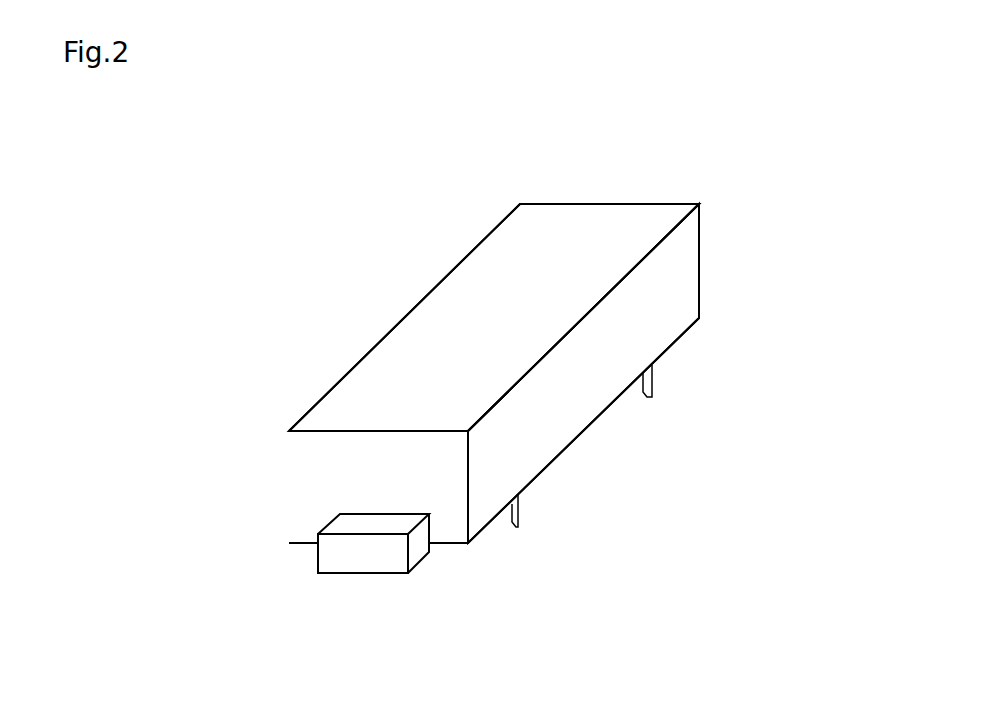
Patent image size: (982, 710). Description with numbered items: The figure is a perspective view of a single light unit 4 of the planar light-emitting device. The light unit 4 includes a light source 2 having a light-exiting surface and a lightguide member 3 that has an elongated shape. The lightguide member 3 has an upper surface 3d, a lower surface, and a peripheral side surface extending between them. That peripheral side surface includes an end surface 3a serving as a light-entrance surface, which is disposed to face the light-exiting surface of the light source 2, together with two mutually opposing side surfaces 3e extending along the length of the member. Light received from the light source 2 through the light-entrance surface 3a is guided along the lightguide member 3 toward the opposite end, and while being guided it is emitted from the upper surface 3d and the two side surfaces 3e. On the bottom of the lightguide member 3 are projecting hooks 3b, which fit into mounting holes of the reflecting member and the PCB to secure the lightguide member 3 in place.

The light source 2 is at (358, 557).
The lightguide member 3 is at (448, 268).
The end surface (light-entrance surface) 3a is at (449, 518).
The projecting hooks 3b is at (652, 397).
The upper surface 3d is at (574, 230).
The side surfaces 3e is at (686, 287).
The light unit 4 is at (720, 190).